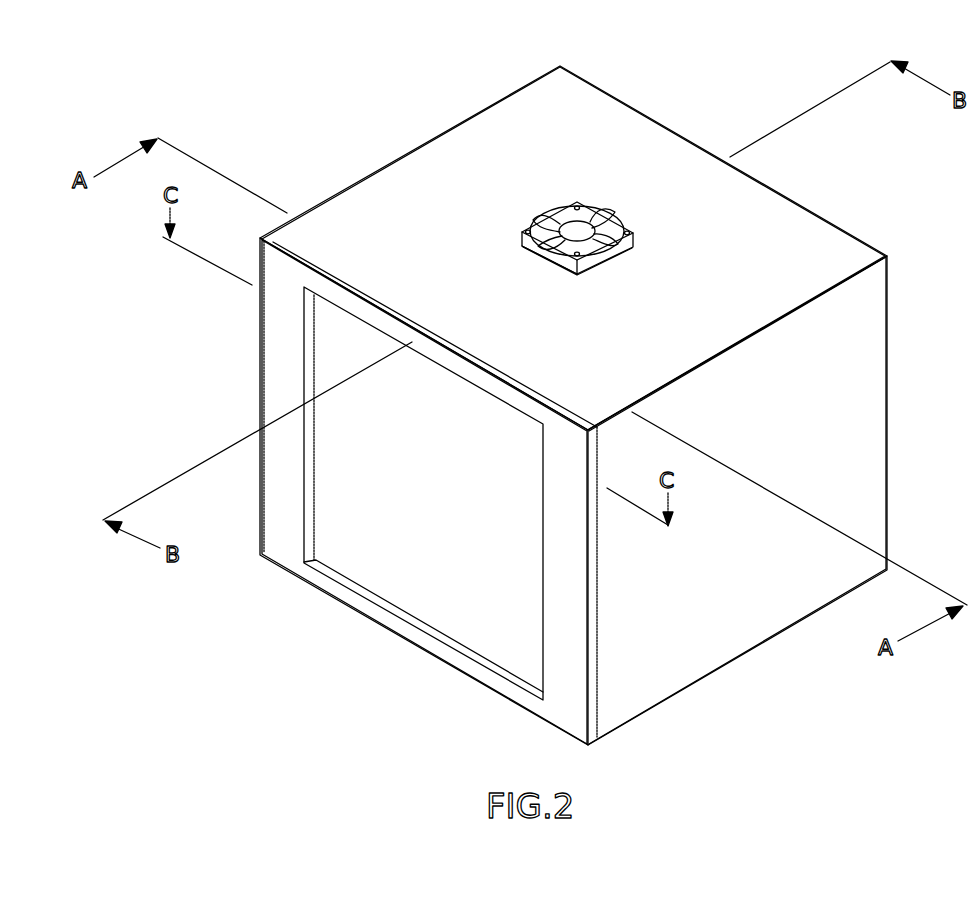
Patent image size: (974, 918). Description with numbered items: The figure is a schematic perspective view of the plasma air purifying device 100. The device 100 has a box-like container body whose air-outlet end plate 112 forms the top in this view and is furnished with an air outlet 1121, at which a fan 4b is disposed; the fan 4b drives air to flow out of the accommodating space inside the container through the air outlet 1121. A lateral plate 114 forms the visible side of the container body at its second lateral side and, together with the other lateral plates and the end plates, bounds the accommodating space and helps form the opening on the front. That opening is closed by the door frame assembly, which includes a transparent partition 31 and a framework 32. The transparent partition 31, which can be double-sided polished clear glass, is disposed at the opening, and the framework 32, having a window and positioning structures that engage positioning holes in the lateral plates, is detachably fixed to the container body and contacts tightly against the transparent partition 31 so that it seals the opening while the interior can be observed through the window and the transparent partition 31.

The plasma air purifying device 100 is at (357, 89).
The fan 4b is at (598, 214).
The air-outlet end plate 112 is at (802, 226).
The air outlet 1121 is at (625, 250).
The lateral plate 114 is at (866, 425).
The framework 32 is at (272, 363).
The transparent partition 31 is at (436, 590).